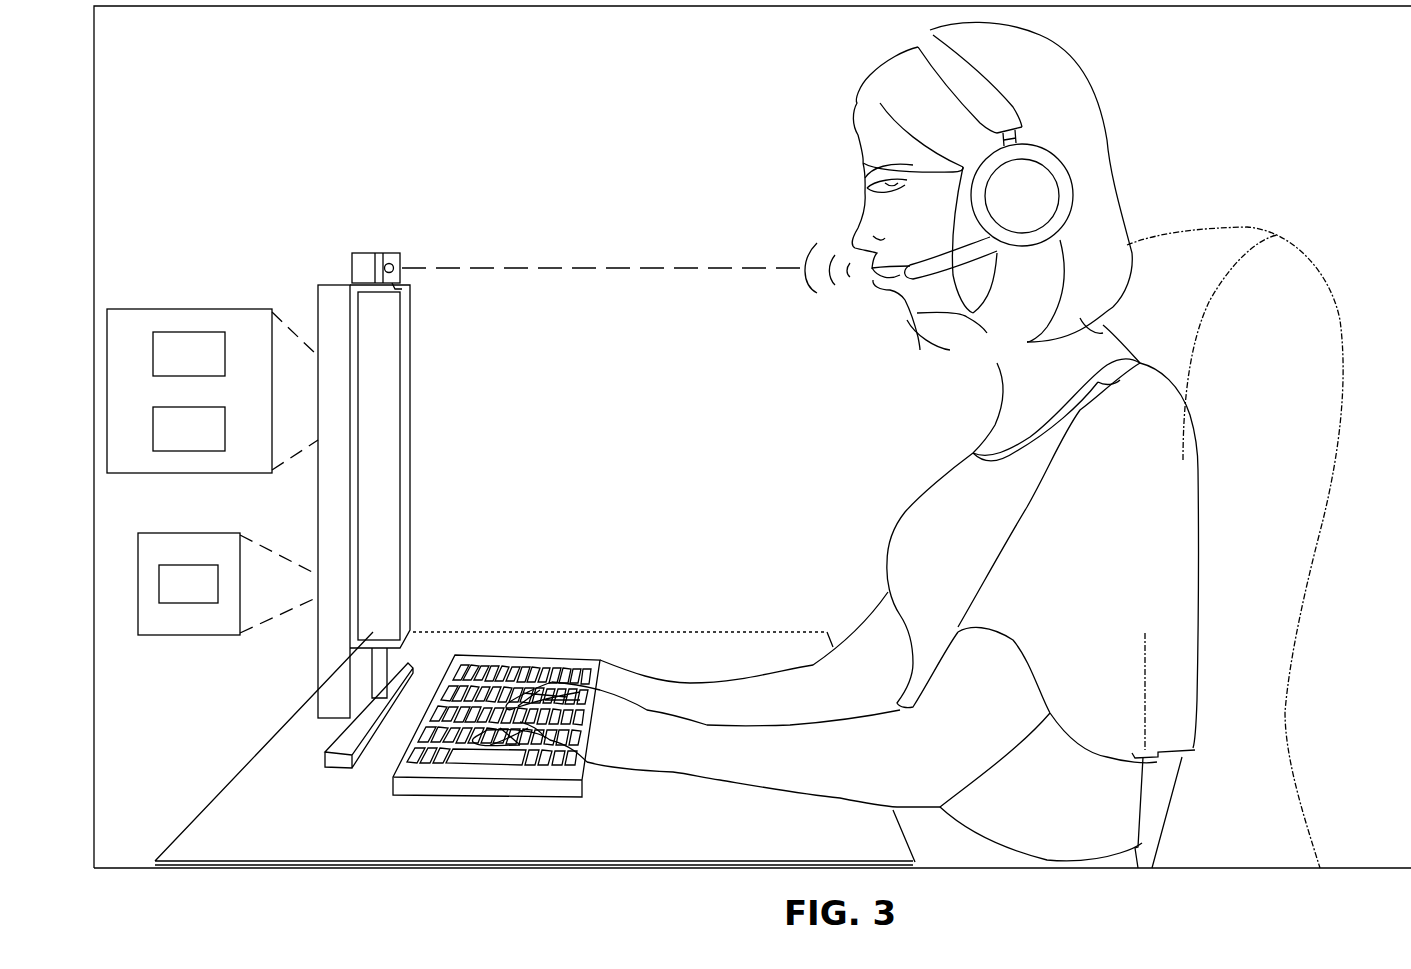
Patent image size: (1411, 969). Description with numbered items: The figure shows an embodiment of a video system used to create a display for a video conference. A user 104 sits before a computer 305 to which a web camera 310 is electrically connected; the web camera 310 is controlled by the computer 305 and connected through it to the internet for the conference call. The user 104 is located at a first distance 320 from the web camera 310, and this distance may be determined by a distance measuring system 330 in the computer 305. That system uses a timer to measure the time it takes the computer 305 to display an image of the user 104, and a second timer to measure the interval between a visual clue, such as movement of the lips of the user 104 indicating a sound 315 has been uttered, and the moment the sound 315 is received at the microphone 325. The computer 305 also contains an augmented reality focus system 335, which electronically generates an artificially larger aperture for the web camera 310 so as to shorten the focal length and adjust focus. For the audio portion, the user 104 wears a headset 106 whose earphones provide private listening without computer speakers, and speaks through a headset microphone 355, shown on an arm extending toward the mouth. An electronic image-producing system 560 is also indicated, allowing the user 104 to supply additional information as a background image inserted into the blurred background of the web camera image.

The user 104 is at (1140, 362).
The headset 106 is at (1008, 92).
The computer 305 is at (318, 285).
The web camera 310 is at (367, 268).
The sound 315 is at (833, 305).
The first distance 320 is at (608, 262).
The microphone 325 is at (400, 257).
The distance measuring system 330 is at (189, 354).
The augmented reality focus system 335 is at (189, 429).
The headset microphone 355 is at (917, 283).
The electronic image-producing system 560 is at (189, 584).